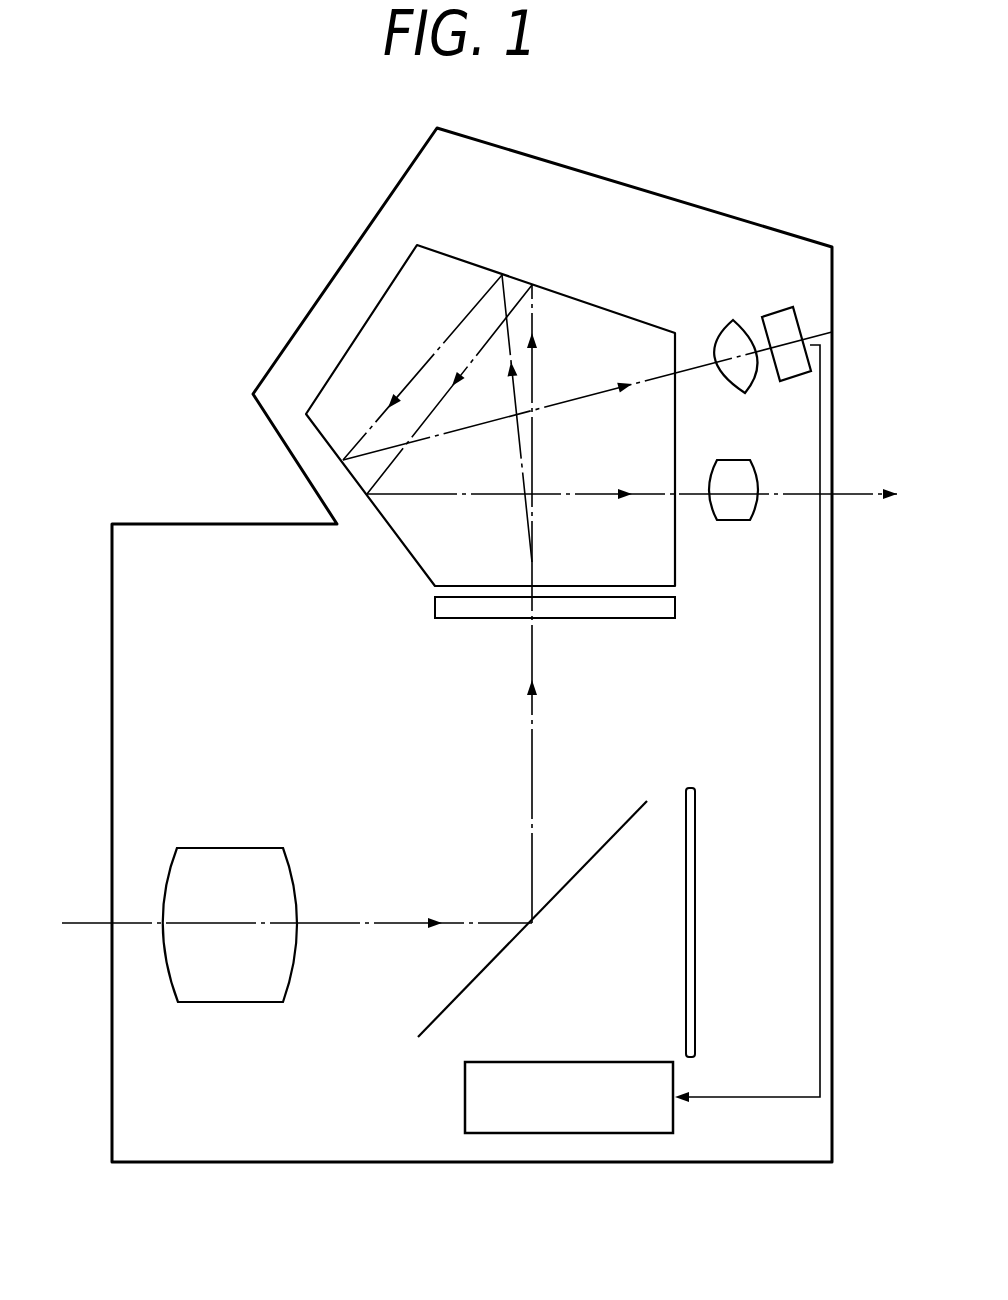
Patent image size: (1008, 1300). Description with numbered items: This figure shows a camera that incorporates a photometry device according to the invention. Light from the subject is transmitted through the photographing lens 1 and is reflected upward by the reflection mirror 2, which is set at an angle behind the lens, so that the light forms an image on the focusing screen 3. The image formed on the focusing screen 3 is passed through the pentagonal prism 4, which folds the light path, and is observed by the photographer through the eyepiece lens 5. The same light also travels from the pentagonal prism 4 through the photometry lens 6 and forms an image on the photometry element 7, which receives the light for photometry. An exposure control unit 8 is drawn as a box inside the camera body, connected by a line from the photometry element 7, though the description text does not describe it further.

The photographing lens 1 is at (233, 1005).
The reflection mirror 2 is at (545, 905).
The focusing screen 3 is at (470, 620).
The pentagonal prism 4 is at (458, 272).
The eyepiece lens 5 is at (738, 478).
The photometry lens 6 is at (731, 328).
The photometry element 7 is at (783, 316).
The exposure control unit 8 is at (465, 1079).